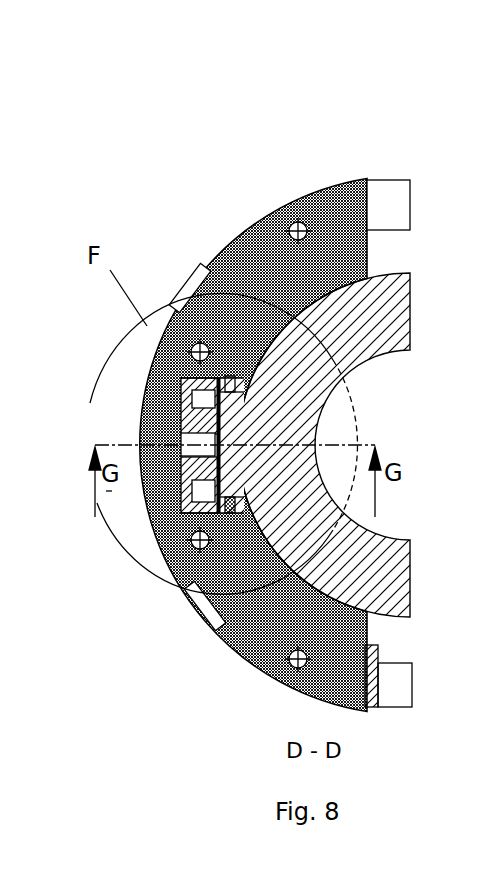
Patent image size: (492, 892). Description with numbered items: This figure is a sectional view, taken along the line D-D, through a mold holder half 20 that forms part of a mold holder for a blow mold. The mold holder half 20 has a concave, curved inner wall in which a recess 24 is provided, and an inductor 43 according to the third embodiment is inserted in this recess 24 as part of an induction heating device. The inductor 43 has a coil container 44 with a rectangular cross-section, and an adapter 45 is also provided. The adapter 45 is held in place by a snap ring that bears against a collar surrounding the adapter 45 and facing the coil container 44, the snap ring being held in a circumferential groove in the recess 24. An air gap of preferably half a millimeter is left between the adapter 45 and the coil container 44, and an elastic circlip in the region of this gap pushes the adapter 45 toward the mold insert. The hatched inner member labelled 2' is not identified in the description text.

The mold holder half 20 is at (298, 182).
The shaft sleeve 2' is at (334, 417).
The inductor 43 is at (196, 428).
The coil container 44 is at (198, 468).
The adapter 45 is at (222, 410).
The recess 24 is at (243, 505).